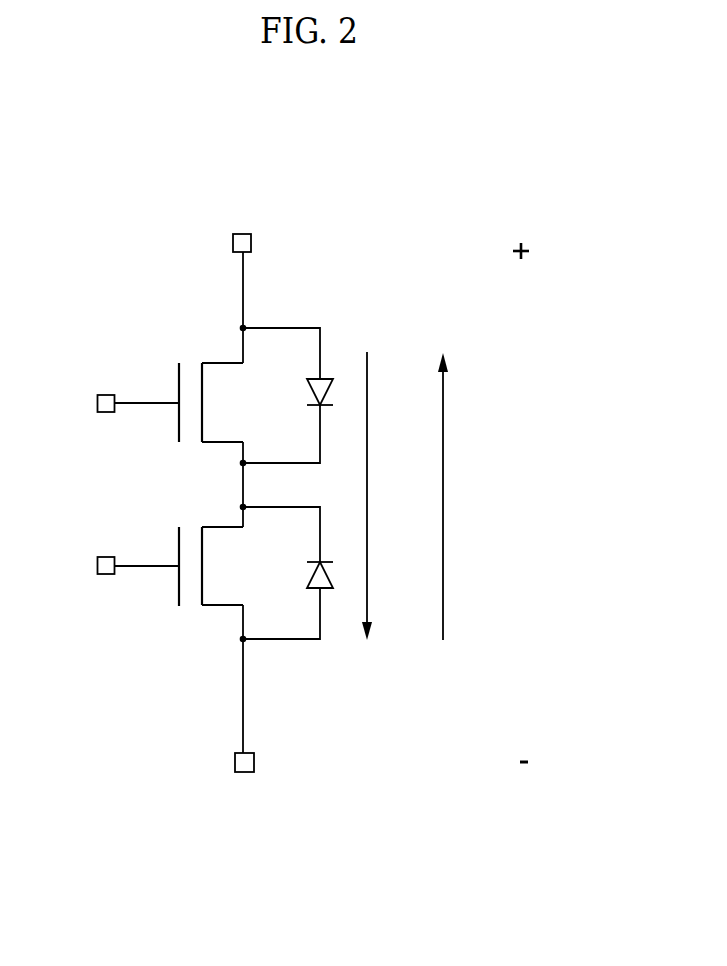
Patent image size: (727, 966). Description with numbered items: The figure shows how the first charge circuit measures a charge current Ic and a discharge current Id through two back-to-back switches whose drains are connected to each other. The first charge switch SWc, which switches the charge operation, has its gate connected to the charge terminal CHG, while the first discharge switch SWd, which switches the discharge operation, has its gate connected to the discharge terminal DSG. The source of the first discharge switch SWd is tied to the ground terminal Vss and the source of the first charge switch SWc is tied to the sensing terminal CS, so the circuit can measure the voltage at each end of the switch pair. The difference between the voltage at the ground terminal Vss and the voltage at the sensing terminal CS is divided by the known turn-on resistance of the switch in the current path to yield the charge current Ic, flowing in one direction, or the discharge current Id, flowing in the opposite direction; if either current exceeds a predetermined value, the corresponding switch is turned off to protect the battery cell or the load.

The ground terminal Vss is at (239, 224).
The first charge switch SWc is at (195, 385).
The first discharge switch SWd is at (195, 588).
The discharge terminal DSG is at (109, 405).
The charge terminal CHG is at (109, 568).
The sensing terminal CS is at (246, 781).
The charge current Ic is at (379, 496).
The discharge current Id is at (454, 496).